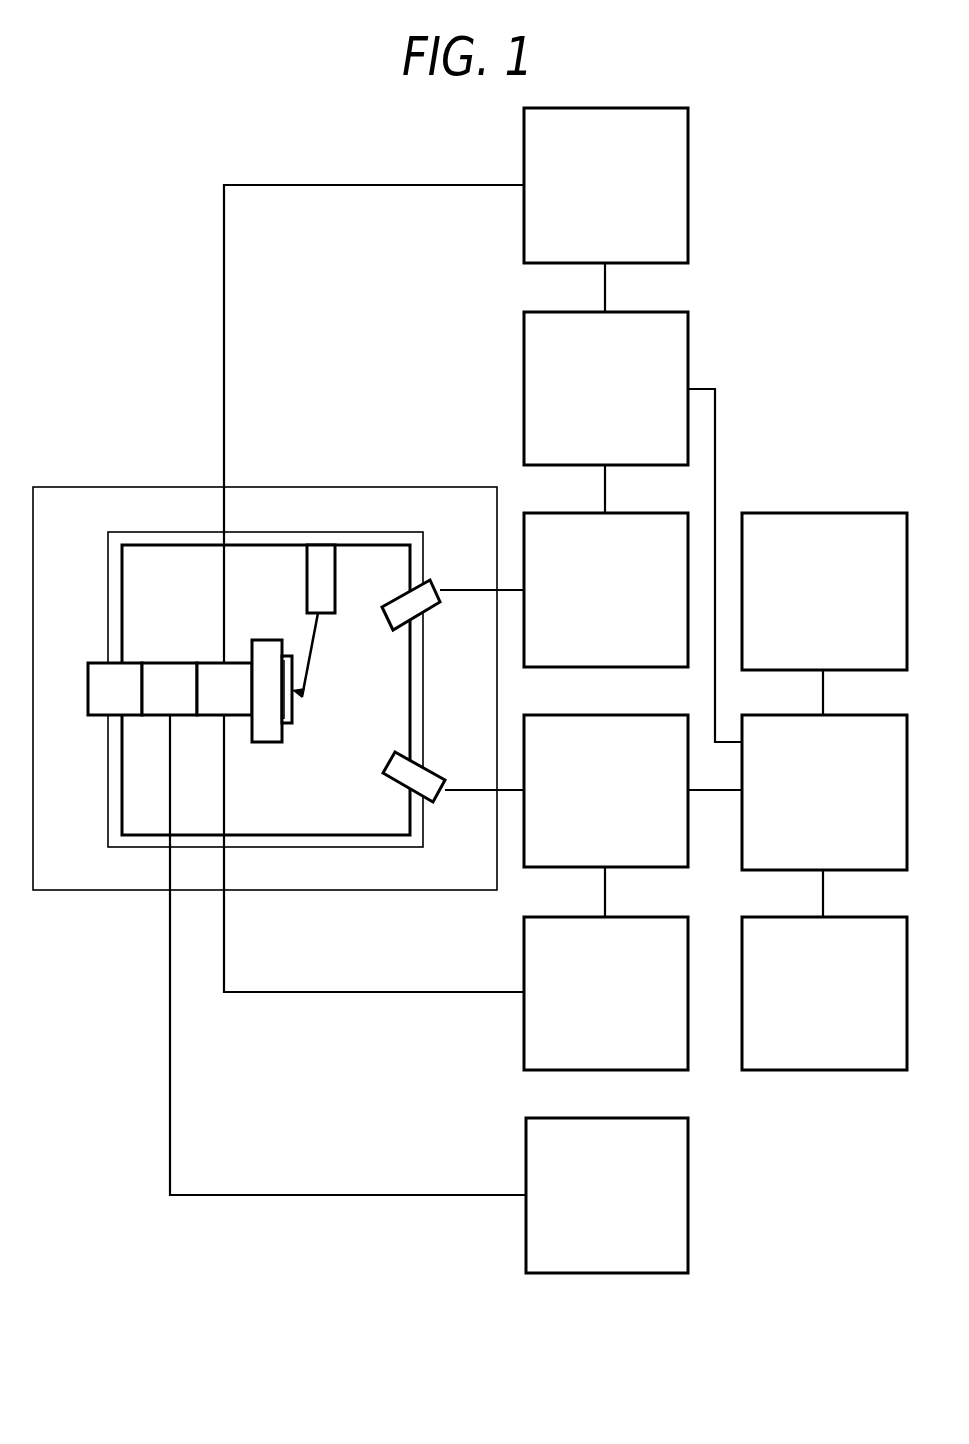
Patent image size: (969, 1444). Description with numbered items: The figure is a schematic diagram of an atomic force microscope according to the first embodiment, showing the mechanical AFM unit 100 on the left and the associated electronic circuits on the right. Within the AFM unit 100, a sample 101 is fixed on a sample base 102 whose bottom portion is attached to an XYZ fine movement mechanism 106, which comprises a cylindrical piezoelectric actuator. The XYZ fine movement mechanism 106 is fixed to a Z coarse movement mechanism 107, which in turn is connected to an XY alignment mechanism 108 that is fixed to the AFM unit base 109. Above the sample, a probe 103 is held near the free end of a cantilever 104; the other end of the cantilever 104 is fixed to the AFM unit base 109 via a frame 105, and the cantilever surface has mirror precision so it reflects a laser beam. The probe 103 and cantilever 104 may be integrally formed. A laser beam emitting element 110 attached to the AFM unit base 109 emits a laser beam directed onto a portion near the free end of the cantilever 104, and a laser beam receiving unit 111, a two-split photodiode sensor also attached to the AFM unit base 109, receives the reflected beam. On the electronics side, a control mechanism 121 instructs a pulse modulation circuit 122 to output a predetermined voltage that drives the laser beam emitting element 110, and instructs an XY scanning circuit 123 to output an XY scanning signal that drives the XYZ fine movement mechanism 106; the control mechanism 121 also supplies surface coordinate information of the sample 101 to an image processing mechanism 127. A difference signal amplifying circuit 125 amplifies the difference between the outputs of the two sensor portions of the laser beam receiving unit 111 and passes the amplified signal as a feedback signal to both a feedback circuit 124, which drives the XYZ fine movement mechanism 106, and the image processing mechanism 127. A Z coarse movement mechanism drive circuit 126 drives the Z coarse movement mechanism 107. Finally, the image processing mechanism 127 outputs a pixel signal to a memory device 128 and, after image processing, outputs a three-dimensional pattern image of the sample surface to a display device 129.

The AFM unit 100 is at (123, 487).
The sample 101 is at (293, 718).
The sample base 102 is at (268, 640).
The probe 103 is at (293, 690).
The cantilever 104 is at (313, 650).
The frame 105 is at (335, 562).
The XYZ fine movement mechanism 106 is at (240, 718).
The Z coarse movement mechanism 107 is at (170, 663).
The XY alignment mechanism 108 is at (102, 663).
The AFM unit base 109 is at (108, 745).
The laser beam emitting element 110 is at (432, 578).
The laser beam receiving unit 111 is at (437, 800).
The control mechanism 121 is at (688, 362).
The pulse modulation circuit 122 is at (625, 513).
The XY scanning circuit 123 is at (688, 175).
The feedback circuit 124 is at (625, 917).
The difference signal amplifying circuit 125 is at (630, 715).
The Z coarse movement mechanism drive circuit 126 is at (632, 1118).
The image processing mechanism 127 is at (835, 715).
The memory device 128 is at (825, 513).
The display device 129 is at (835, 917).